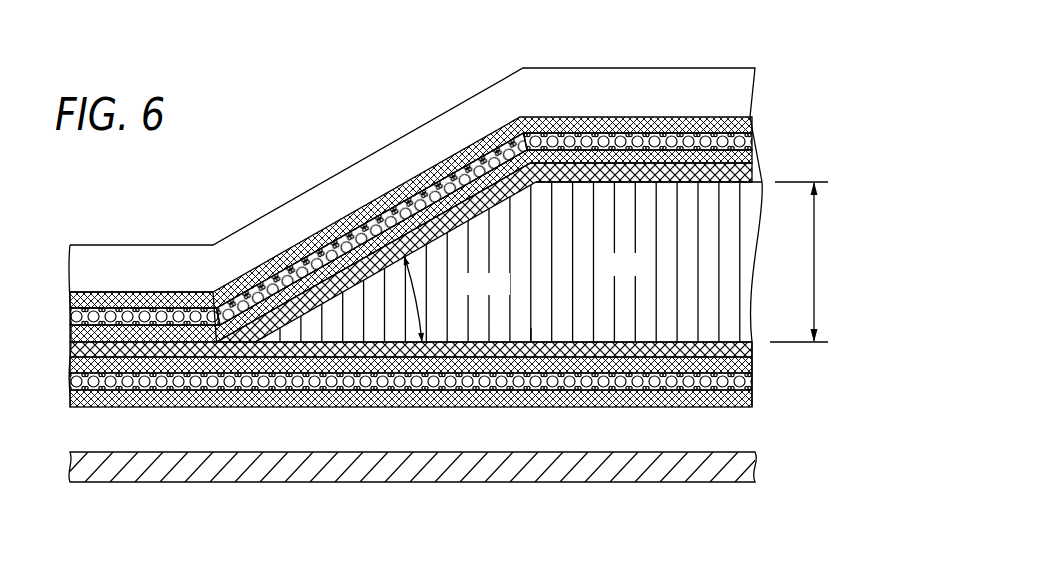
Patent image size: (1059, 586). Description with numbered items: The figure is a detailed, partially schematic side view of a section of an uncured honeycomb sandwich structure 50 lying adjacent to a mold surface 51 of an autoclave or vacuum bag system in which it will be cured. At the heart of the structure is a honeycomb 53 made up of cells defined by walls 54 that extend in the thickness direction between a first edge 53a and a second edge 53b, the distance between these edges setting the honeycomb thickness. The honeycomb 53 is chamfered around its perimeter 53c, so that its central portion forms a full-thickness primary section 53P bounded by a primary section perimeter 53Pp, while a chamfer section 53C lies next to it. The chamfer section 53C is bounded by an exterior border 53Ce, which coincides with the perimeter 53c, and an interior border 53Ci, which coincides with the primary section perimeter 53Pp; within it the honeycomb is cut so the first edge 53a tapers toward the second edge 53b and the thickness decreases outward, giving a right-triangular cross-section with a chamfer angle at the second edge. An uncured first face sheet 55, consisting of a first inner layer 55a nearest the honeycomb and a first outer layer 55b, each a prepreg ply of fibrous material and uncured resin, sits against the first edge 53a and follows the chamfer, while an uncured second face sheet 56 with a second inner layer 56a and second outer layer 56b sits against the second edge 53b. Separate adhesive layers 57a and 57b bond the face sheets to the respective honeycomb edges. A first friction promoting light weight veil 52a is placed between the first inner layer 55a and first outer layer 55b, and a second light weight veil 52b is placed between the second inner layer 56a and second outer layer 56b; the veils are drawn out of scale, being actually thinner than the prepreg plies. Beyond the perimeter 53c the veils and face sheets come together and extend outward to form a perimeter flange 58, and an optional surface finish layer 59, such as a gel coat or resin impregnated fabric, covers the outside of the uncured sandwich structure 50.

The uncured honeycomb sandwich structure 50 is at (322, 128).
The mold surface 51 is at (745, 452).
The light weight veil 52a is at (748, 135).
The light weight veil 52b is at (737, 375).
The honeycomb 53 is at (542, 290).
The chamfer section 53C is at (395, 269).
The primary section 53P is at (646, 262).
The primary section perimeter 53Pp is at (532, 213).
The first edge 53a is at (683, 182).
The second edge 53b is at (623, 337).
The perimeter 53c is at (255, 340).
The exterior border 53Ce is at (257, 342).
The interior border 53Ci is at (530, 315).
The walls 54 is at (750, 262).
The first face sheet 55 is at (458, 177).
The first inner layer 55a is at (745, 160).
The first outer layer 55b is at (750, 117).
The second face sheet 56 is at (458, 438).
The second inner layer 56a is at (752, 367).
The second outer layer 56b is at (735, 405).
The adhesive layer 57a is at (683, 182).
The adhesive layer 57b is at (732, 341).
The perimeter flange 58 is at (118, 283).
The surface finish layer 59 is at (541, 68).